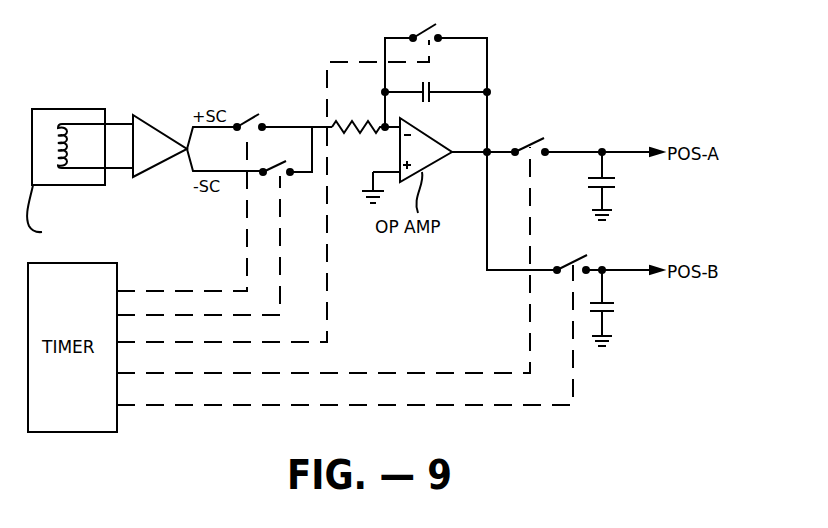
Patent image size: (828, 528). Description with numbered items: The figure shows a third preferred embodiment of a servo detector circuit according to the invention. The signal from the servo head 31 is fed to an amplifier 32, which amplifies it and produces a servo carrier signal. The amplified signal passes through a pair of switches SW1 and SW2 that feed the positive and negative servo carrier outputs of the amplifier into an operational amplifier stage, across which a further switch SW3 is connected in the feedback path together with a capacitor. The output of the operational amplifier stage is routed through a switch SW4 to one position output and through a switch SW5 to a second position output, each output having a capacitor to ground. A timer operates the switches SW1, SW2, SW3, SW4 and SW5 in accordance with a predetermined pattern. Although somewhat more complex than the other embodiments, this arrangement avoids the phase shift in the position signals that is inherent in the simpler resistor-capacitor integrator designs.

The servo head 31 is at (72, 109).
The amplifier 32 is at (147, 120).
The switch SW1 is at (257, 110).
The switch SW2 is at (282, 156).
The switch SW3 is at (435, 21).
The switch SW4 is at (538, 134).
The switch SW5 is at (581, 252).